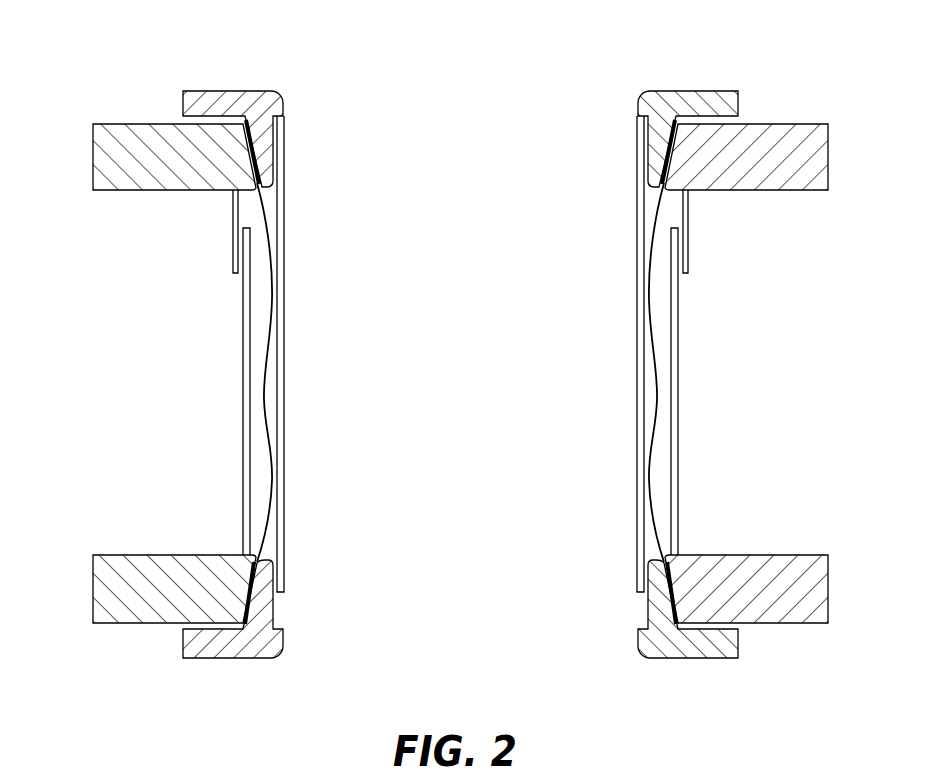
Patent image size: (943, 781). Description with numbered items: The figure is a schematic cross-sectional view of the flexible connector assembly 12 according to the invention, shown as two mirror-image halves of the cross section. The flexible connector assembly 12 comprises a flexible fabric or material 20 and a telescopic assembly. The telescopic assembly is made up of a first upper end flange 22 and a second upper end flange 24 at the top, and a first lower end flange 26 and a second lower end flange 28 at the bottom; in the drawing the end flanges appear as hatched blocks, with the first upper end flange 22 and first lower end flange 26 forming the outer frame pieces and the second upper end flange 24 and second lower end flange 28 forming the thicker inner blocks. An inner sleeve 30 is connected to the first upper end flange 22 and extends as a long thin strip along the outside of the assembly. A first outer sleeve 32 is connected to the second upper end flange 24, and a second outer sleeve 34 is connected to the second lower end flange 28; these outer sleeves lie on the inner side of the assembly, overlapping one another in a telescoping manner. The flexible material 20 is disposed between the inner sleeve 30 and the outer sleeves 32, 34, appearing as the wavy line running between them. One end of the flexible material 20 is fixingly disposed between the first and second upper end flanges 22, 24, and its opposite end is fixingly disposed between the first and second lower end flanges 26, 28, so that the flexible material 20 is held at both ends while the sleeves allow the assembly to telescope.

The flexible connector assembly 12 is at (183, 360).
The flexible fabric or material 20 is at (263, 405).
The first upper end flange 22 is at (232, 91).
The second upper end flange 24 is at (92, 152).
The first lower end flange 26 is at (240, 658).
The second lower end flange 28 is at (93, 592).
The inner sleeve 30 is at (285, 468).
The first outer sleeve 32 is at (233, 232).
The second outer sleeve 34 is at (243, 466).